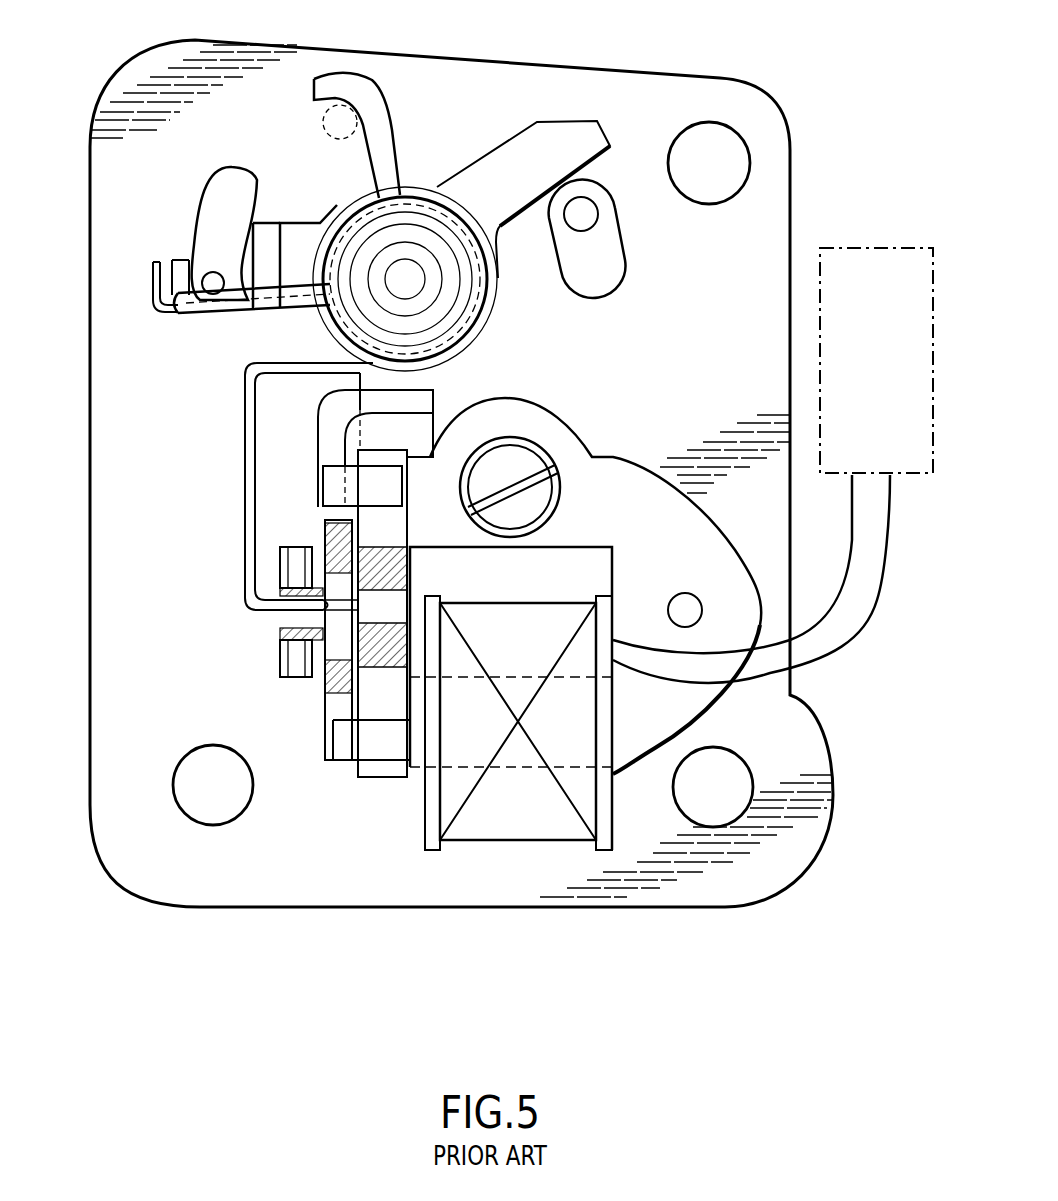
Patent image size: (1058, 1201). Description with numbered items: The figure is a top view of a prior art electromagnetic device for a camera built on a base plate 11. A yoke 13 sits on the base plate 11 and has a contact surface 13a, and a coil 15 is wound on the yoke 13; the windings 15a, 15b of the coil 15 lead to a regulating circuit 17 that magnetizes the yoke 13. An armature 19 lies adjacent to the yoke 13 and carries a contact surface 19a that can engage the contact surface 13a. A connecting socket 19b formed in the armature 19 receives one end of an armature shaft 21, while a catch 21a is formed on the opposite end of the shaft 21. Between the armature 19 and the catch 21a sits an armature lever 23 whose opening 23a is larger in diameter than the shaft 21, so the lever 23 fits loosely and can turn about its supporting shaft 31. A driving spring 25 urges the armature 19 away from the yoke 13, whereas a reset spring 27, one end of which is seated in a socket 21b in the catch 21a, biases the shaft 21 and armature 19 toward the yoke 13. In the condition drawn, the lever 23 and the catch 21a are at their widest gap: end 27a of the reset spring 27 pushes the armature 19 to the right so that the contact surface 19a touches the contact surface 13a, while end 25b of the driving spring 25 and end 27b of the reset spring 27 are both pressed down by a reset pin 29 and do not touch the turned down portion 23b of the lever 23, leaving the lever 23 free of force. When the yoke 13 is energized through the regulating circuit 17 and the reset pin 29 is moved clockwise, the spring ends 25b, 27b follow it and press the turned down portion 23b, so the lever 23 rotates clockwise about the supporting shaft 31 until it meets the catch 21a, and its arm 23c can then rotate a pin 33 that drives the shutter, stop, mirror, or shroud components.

The base plate 11 is at (698, 907).
The yoke 13 is at (612, 453).
The contact surface 13a is at (402, 530).
The coil 15 is at (568, 848).
The winding 15a is at (867, 632).
The winding 15b is at (838, 594).
The regulating circuit 17 is at (882, 248).
The armature 19 is at (393, 707).
The contact surface 19a is at (487, 402).
The connecting socket 19b is at (380, 620).
The armature shaft 21 is at (277, 653).
The catch 21a is at (293, 572).
The socket 21b is at (322, 602).
The armature lever 23 is at (344, 712).
The opening 23a is at (343, 658).
The turned down portion 23b is at (268, 232).
The arm 23c is at (587, 152).
The driving spring 25 is at (418, 207).
The end of driving spring 25b is at (213, 313).
The reset spring 27 is at (250, 492).
The end of reset spring 27a is at (307, 610).
The end of reset spring 27b is at (160, 287).
The reset pin 29 is at (207, 278).
The supporting shaft 31 is at (427, 300).
The pin 33 is at (598, 216).